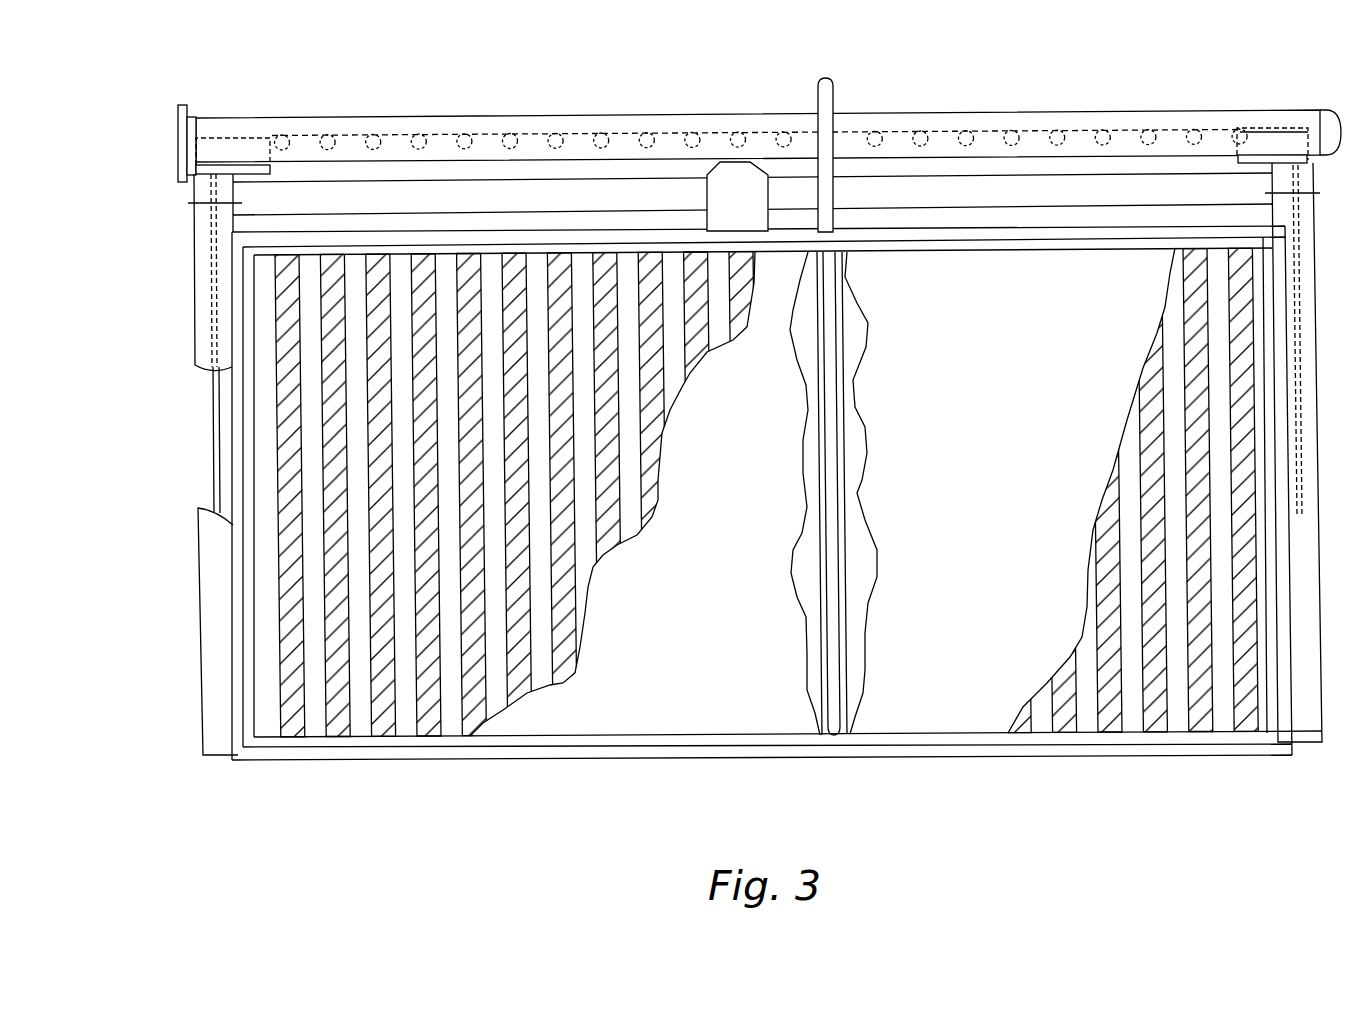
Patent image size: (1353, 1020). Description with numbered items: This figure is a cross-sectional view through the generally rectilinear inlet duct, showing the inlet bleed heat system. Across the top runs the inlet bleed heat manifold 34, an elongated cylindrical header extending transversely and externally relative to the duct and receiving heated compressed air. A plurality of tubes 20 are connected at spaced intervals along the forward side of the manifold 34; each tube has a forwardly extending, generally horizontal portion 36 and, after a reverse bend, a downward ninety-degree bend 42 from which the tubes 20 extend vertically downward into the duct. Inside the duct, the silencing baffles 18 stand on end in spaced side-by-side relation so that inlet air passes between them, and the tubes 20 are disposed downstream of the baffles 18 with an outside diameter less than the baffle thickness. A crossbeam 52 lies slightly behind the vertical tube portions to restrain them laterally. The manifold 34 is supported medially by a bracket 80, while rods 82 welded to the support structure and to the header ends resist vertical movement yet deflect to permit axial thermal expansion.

The silencing baffles 18 is at (285, 450).
The tubes 20 is at (833, 480).
The inlet bleed heat manifold 34 is at (318, 117).
The forwardly extending horizontal portion 36 is at (468, 117).
The downward 90° bend 42 is at (820, 90).
The crossbeam 52 is at (270, 216).
The bracket 80 is at (705, 195).
The rods 82 is at (214, 393).